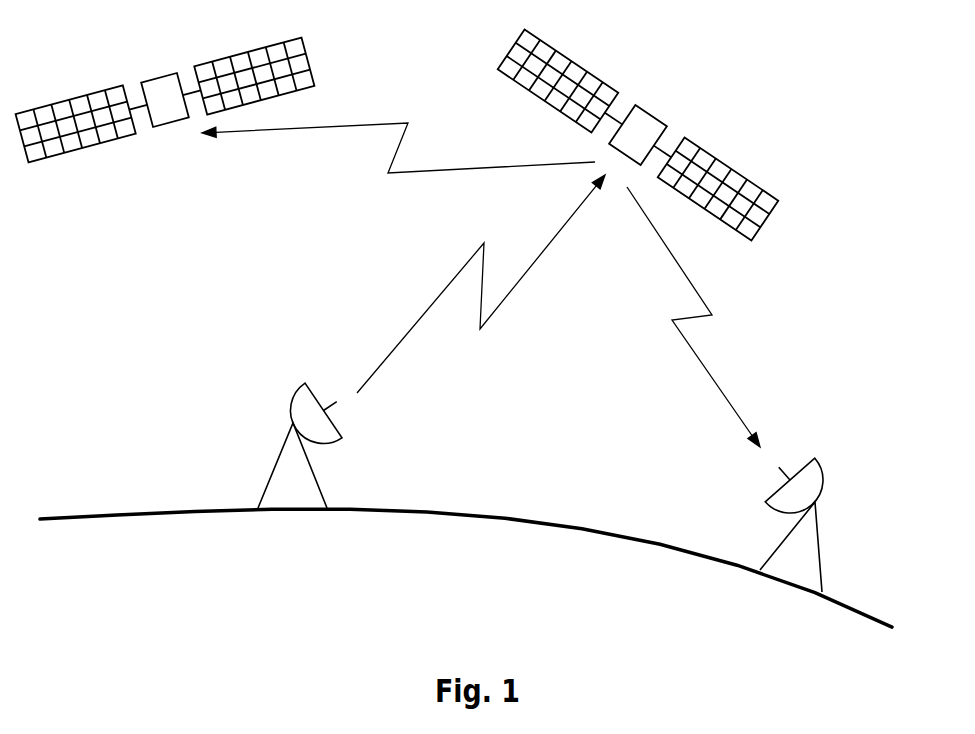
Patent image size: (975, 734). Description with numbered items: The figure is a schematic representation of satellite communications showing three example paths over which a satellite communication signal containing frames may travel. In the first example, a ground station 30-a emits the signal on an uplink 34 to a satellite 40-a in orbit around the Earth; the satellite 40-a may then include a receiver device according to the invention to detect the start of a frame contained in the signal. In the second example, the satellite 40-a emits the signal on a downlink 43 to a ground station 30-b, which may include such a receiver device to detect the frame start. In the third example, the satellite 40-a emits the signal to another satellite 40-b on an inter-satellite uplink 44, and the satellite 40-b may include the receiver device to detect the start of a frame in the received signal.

The satellite 40-a is at (643, 109).
The another satellite 40-b is at (176, 72).
The ground station 30-a is at (273, 470).
The ground station 30-b is at (819, 550).
The uplink 34 is at (415, 327).
The downlink 43 is at (712, 377).
The inter-satellite uplink 44 is at (305, 128).